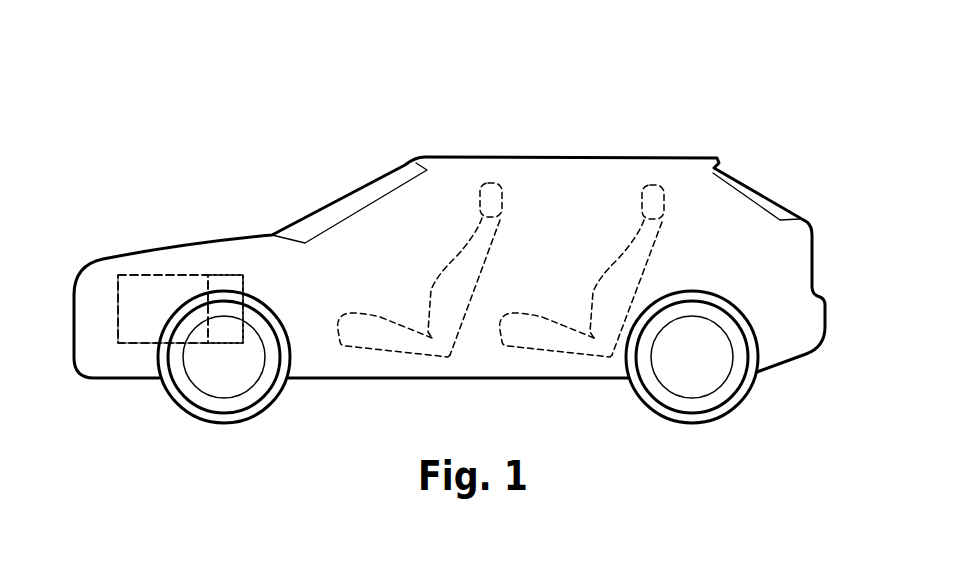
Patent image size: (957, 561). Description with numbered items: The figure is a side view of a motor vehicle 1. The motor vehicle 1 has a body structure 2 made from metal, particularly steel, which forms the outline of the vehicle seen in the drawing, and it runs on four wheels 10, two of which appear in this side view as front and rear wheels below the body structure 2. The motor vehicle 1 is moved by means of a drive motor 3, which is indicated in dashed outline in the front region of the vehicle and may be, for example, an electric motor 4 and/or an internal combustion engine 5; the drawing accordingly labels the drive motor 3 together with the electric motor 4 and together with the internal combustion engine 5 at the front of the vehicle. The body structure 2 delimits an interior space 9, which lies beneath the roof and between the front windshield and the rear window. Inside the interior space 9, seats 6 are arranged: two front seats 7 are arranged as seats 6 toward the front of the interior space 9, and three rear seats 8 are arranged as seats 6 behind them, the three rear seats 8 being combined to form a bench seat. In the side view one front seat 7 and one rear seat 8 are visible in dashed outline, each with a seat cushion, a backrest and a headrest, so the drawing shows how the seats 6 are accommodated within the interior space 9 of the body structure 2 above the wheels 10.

The motor vehicle 1 is at (722, 118).
The body structure 2 is at (792, 265).
The drive motor 3 is at (184, 260).
The electric motor 4 is at (138, 283).
The internal combustion engine 5 is at (222, 283).
The seats 6 is at (501, 223).
The front seats 7 is at (472, 247).
The rear seats 8 is at (628, 245).
The interior space 9 is at (550, 205).
The wheels 10 is at (227, 412).